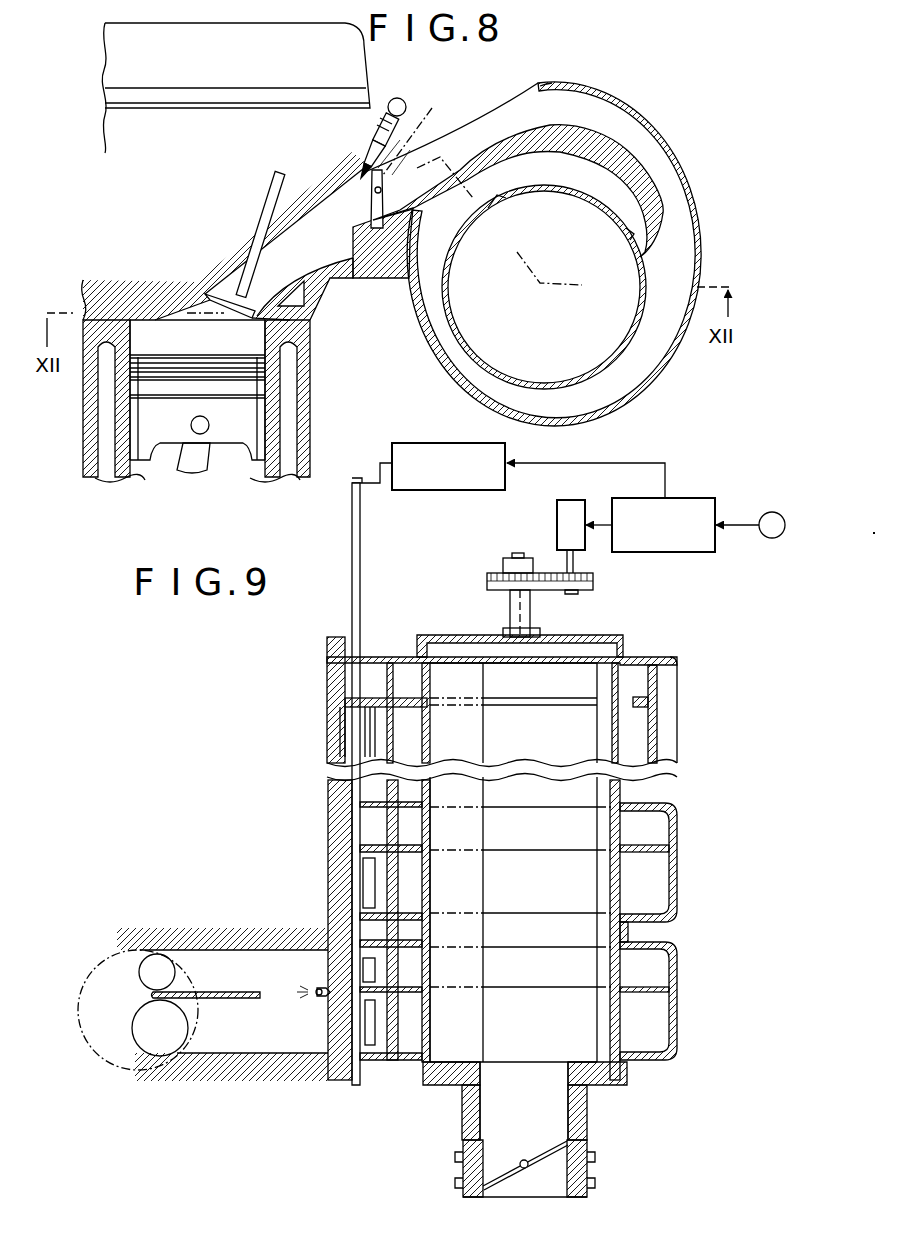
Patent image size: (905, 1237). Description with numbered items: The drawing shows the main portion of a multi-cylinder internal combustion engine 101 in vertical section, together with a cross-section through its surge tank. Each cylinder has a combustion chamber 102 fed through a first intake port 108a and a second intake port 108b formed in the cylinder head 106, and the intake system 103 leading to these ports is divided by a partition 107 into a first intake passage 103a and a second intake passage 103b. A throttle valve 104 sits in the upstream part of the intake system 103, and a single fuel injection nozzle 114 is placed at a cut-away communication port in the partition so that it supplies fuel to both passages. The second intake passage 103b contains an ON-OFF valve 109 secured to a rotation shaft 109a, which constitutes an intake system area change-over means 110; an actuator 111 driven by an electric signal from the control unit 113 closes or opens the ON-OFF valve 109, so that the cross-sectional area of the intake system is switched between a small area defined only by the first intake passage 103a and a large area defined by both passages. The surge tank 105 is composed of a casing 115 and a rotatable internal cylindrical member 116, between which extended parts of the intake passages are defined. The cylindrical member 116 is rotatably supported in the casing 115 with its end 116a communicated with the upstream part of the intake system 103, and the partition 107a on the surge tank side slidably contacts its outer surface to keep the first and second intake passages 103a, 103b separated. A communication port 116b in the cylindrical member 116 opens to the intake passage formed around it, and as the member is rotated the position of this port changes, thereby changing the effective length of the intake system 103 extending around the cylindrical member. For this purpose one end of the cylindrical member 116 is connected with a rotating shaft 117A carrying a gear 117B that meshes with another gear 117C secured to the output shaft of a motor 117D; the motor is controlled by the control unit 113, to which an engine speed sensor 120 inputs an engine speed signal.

In FIG. 8, the multi-cylinder internal combustion engine 101 is at (318, 416).
In FIG. 9, the multi-cylinder internal combustion engine 101 is at (113, 940).
In FIG. 8, the combustion chamber 102 is at (157, 330).
In FIG. 9, the combustion chamber 102 is at (110, 1060).
In FIG. 8, the intake system 103 is at (340, 193).
In FIG. 9, the intake system 103 is at (325, 688).
In FIG. 9, the first intake passage 103a is at (642, 898).
In FIG. 8, the second intake passage 103b is at (572, 92).
In FIG. 9, the second intake passage 103b is at (640, 822).
In FIG. 9, the throttle valve 104 is at (483, 1170).
In FIG. 8, the surge tank 105 is at (703, 172).
In FIG. 9, the surge tank 105 is at (684, 862).
In FIG. 8, the cylinder head 106 is at (318, 304).
In FIG. 8, the partition 107 is at (290, 248).
In FIG. 9, the partition 107 is at (217, 990).
In FIG. 8, the partition 107a is at (475, 118).
In FIG. 9, the partition 107a is at (527, 707).
In FIG. 9, the first intake port 108a is at (165, 1052).
In FIG. 8, the second intake port 108b is at (210, 292).
In FIG. 9, the second intake port 108b is at (152, 966).
In FIG. 8, the ON-OFF valve 109 is at (385, 207).
In FIG. 9, the ON-OFF valve 109 is at (330, 705).
In FIG. 9, the rotation shaft 109a is at (360, 595).
In FIG. 8, the intake system area change-over means 110 is at (421, 100).
In FIG. 9, the intake system area change-over means 110 is at (382, 454).
In FIG. 9, the actuator 111 is at (415, 490).
In FIG. 9, the control unit 113 is at (700, 553).
In FIG. 8, the fuel injection nozzle 114 is at (362, 133).
In FIG. 9, the fuel injection nozzle 114 is at (316, 984).
In FIG. 8, the casing 115 is at (660, 362).
In FIG. 9, the casing 115 is at (657, 712).
In FIG. 8, the rotatable internal cylindrical member 116 is at (572, 390).
In FIG. 9, the rotatable internal cylindrical member 116 is at (628, 662).
In FIG. 9, the end of the rotatable cylindrical member 116a is at (553, 1102).
In FIG. 8, the communication port 116b is at (630, 233).
In FIG. 9, the communication port 116b is at (593, 727).
In FIG. 9, the rotating shaft 117A is at (516, 611).
In FIG. 9, the gear 117B is at (489, 572).
In FIG. 9, the gear 117C is at (594, 581).
In FIG. 9, the motor 117D is at (557, 521).
In FIG. 9, the engine speed sensor 120 is at (772, 512).